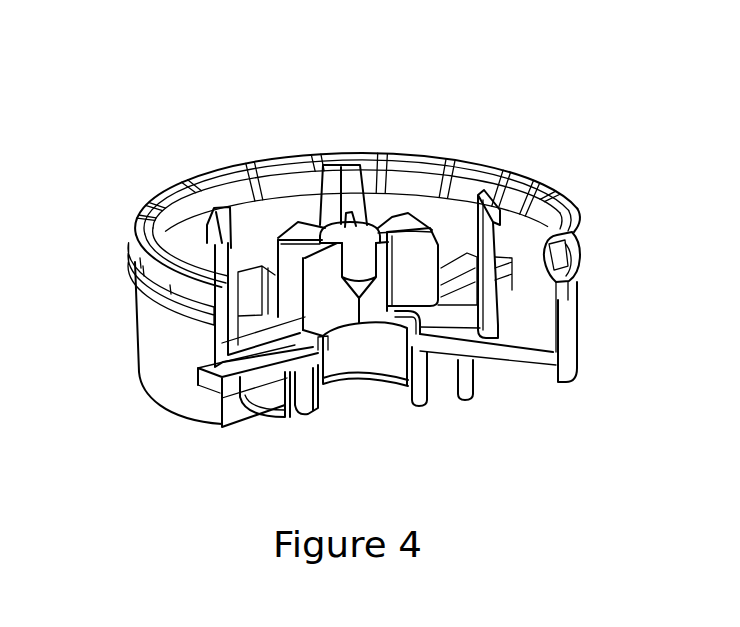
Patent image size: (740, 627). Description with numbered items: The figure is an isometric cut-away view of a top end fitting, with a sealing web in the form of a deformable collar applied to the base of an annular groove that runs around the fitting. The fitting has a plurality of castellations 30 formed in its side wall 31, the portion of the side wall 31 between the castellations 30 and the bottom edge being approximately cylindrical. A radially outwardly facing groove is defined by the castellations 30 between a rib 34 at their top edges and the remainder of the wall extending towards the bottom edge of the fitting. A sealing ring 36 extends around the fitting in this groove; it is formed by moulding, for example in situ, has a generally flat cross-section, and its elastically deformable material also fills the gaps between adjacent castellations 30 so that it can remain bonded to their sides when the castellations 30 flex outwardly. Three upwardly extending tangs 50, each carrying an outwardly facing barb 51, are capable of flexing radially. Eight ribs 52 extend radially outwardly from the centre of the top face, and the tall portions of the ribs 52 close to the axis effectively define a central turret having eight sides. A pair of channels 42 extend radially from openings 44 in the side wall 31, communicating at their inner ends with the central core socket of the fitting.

The castellations 30 is at (540, 178).
The side wall 31 is at (580, 328).
The rib 34 is at (570, 204).
The sealing ring 36 is at (157, 277).
The channels 42 is at (238, 377).
The openings 44 is at (193, 387).
The tangs 50 is at (548, 250).
The barb 51 is at (213, 222).
The ribs 52 is at (285, 252).